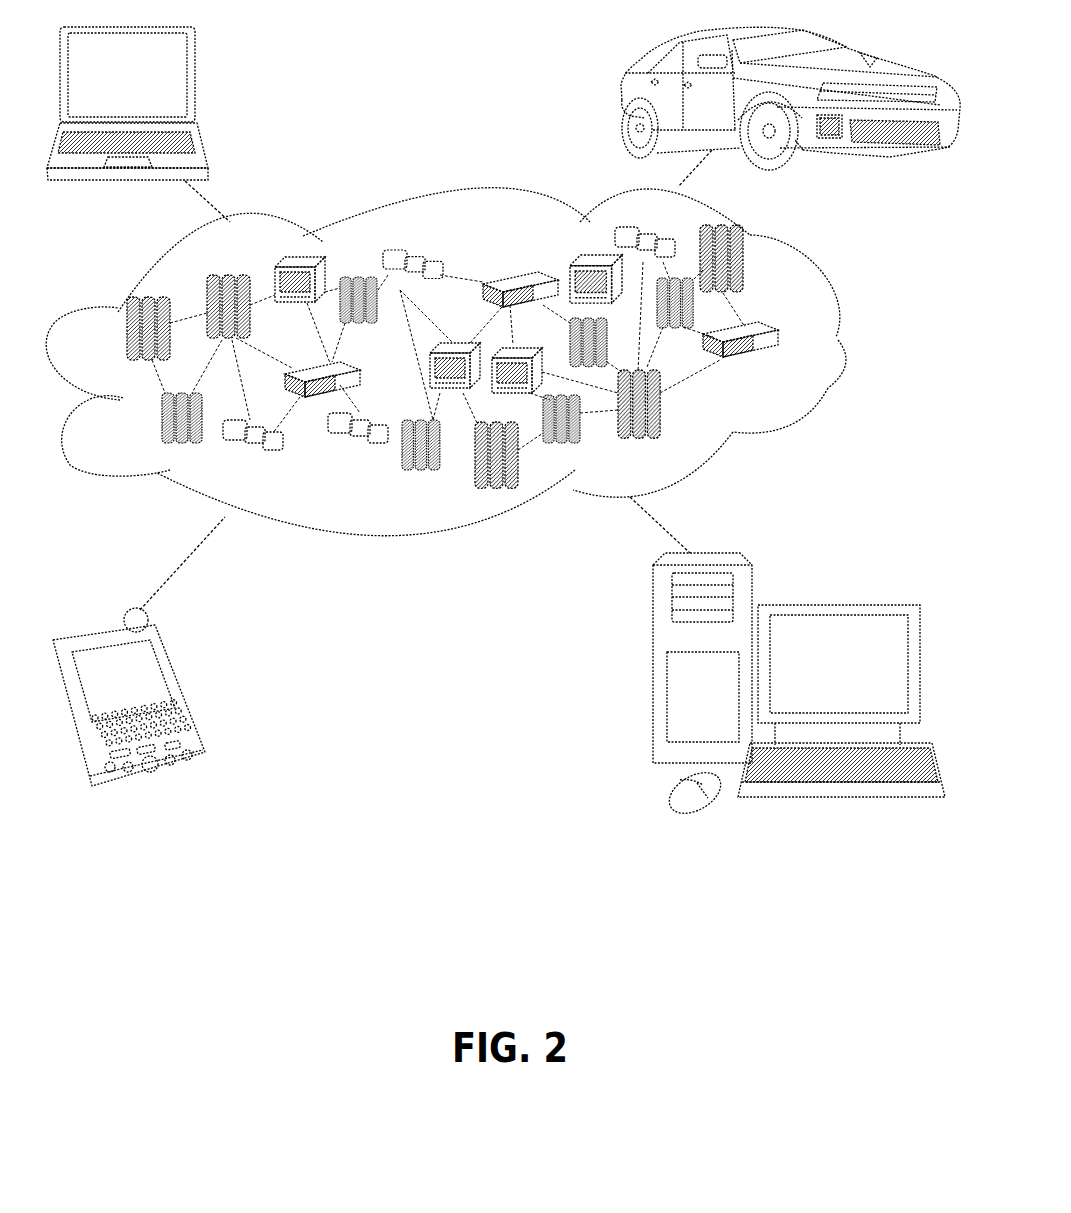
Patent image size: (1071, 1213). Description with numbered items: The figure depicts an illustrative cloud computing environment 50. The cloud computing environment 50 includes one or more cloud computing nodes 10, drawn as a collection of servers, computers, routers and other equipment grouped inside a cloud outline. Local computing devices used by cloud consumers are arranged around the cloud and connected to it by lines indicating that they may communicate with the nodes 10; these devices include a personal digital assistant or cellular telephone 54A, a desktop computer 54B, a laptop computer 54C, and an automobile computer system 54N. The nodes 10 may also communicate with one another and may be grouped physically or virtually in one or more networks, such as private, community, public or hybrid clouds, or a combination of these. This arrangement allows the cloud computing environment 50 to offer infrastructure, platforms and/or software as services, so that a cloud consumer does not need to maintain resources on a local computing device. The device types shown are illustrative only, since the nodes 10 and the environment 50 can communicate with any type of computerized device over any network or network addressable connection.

The cloud computing nodes 10 is at (790, 369).
The cloud computing environment 50 is at (468, 362).
The personal digital assistant (PDA) or cellular telephone 54A is at (187, 689).
The desktop computer 54B is at (836, 605).
The laptop computer 54C is at (197, 83).
The automobile computer system 54N is at (628, 106).